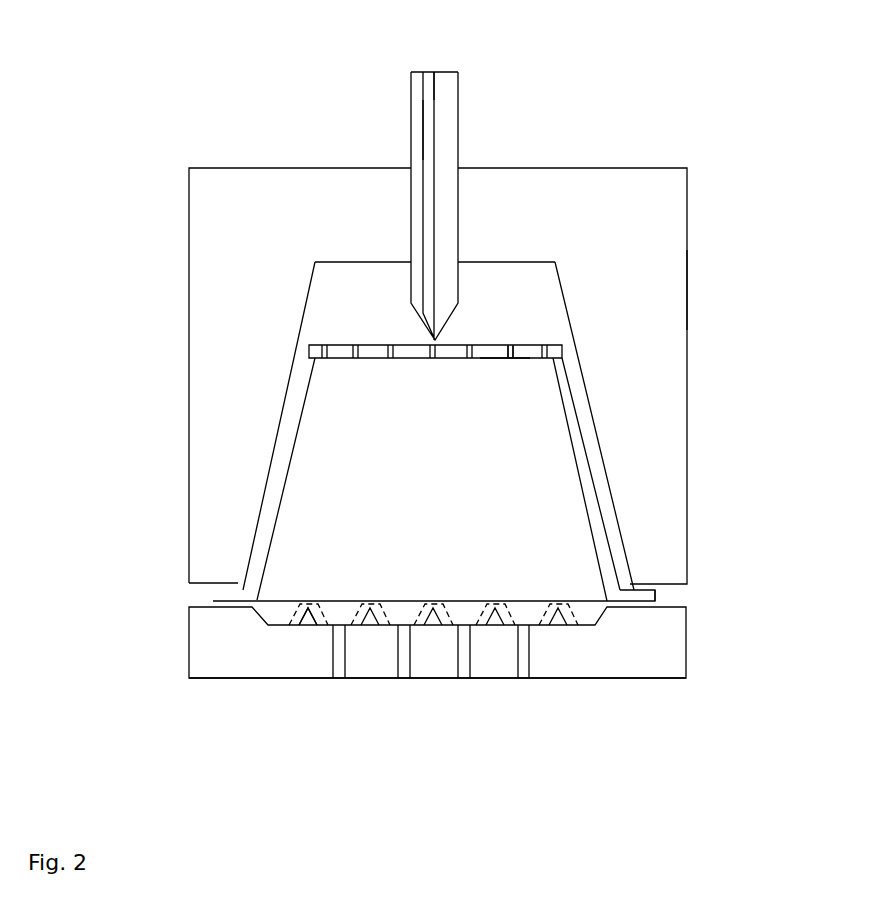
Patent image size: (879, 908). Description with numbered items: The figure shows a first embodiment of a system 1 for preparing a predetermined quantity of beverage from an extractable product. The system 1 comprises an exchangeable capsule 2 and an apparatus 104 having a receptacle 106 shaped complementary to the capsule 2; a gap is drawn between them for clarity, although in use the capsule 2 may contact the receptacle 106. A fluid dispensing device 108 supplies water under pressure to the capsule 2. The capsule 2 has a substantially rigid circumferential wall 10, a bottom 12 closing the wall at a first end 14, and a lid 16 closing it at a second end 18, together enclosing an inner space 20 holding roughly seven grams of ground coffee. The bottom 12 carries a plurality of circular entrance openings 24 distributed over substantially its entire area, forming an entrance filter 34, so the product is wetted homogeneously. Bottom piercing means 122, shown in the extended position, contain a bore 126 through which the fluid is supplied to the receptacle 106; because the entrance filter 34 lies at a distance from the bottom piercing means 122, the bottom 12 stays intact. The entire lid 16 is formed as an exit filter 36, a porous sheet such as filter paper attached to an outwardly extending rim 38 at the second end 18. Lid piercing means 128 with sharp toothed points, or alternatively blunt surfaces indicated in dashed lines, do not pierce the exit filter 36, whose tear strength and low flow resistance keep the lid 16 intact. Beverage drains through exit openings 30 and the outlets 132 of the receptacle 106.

The system 1 is at (716, 716).
The exchangeable capsule 2 is at (592, 470).
The circumferential wall 10 is at (602, 537).
The bottom 12 is at (522, 352).
The first end 14 is at (562, 358).
The lid 16 is at (593, 604).
The second end 18 is at (610, 583).
The inner space 20 is at (360, 400).
The entrance openings 24 is at (424, 338).
The exit openings 30 is at (496, 581).
The entrance filter 34 is at (503, 370).
The exit filter 36 is at (537, 604).
The outwardly extending rim 38 is at (652, 596).
The apparatus 104 is at (718, 192).
The receptacle 106 is at (687, 288).
The fluid dispensing device 108 is at (460, 90).
The bottom piercing means 122 is at (460, 130).
The bore 126 is at (430, 72).
The lid piercing means 128 is at (310, 620).
The outlets 132 is at (338, 672).